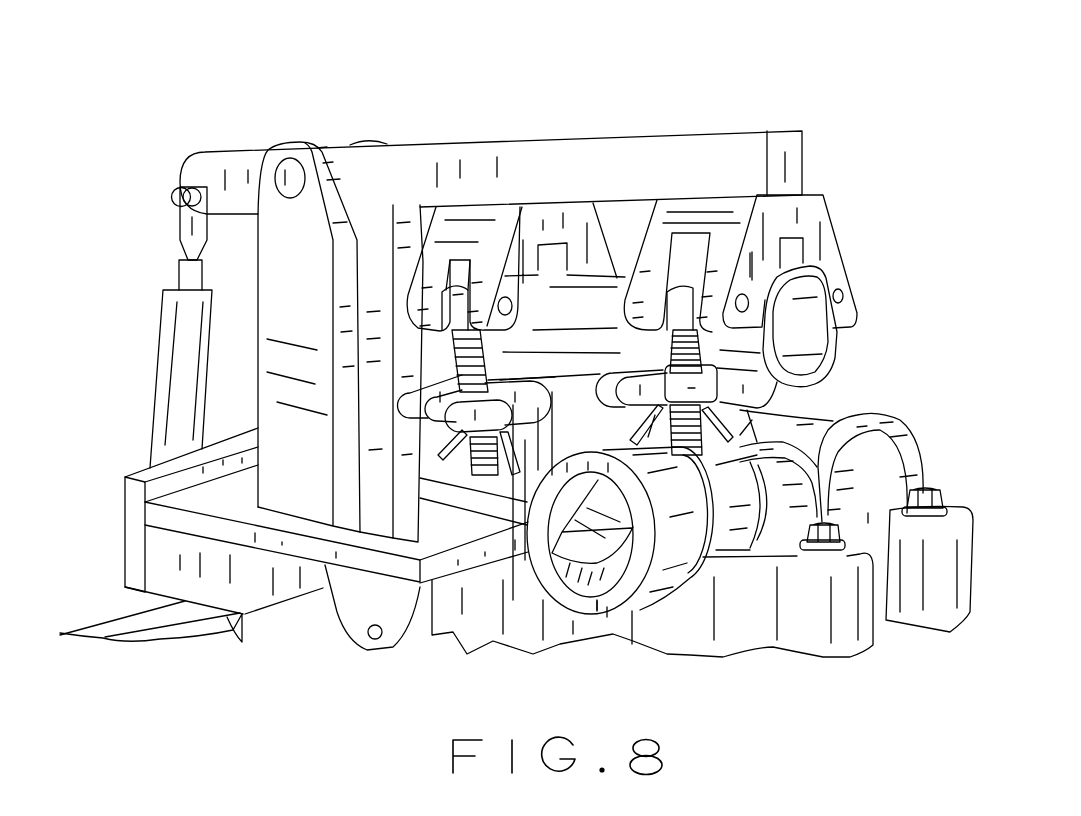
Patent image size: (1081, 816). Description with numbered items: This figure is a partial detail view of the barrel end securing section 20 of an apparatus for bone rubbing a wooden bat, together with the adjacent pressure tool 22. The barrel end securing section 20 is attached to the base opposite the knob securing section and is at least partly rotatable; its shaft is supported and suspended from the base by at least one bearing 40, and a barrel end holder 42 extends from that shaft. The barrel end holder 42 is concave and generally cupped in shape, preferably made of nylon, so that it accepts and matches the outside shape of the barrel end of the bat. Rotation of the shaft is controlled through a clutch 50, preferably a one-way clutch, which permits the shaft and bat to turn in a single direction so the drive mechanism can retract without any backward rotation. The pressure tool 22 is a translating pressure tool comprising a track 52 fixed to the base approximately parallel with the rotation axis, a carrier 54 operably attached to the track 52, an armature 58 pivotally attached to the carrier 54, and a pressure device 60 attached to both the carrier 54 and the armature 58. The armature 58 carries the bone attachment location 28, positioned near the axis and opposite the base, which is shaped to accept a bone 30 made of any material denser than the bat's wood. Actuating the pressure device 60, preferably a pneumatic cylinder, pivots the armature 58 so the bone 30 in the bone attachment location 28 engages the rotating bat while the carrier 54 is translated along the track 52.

The barrel end securing section 20 is at (952, 454).
The pressure tool 22 is at (387, 113).
The bone attachment location 28 is at (873, 233).
The bone 30 is at (842, 330).
The bearing 40 is at (973, 510).
The barrel end holder 42 is at (603, 601).
The clutch 50 is at (812, 432).
The track 52 is at (128, 626).
The carrier 54 is at (202, 521).
The armature 58 is at (660, 133).
The pressure device 60 is at (170, 288).